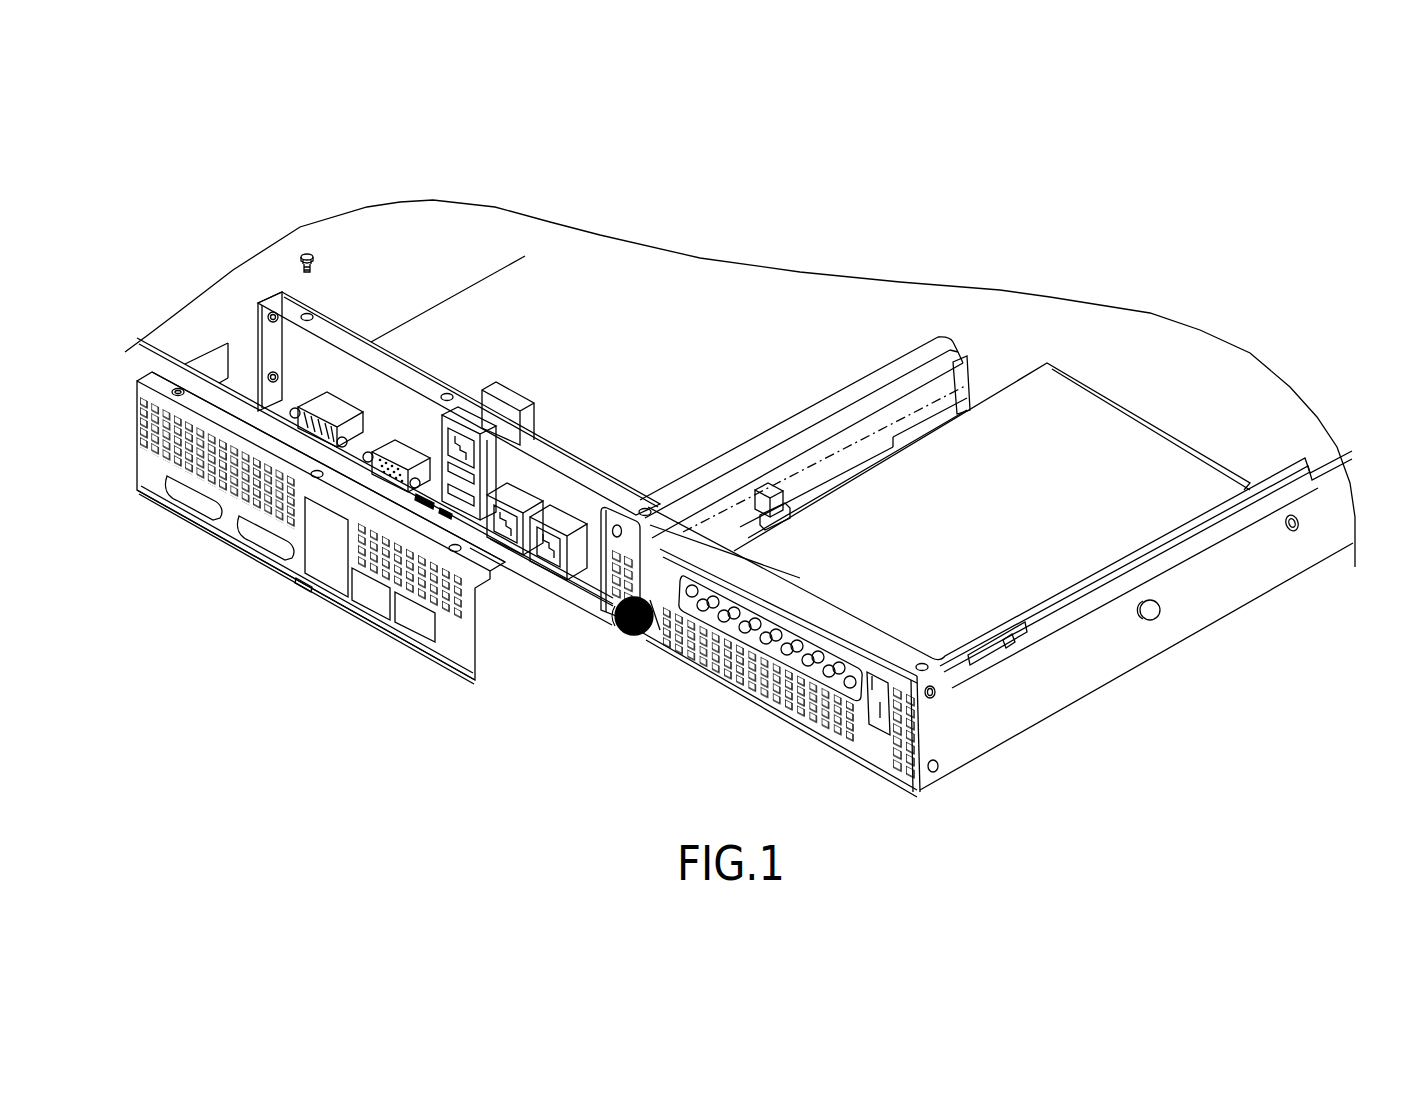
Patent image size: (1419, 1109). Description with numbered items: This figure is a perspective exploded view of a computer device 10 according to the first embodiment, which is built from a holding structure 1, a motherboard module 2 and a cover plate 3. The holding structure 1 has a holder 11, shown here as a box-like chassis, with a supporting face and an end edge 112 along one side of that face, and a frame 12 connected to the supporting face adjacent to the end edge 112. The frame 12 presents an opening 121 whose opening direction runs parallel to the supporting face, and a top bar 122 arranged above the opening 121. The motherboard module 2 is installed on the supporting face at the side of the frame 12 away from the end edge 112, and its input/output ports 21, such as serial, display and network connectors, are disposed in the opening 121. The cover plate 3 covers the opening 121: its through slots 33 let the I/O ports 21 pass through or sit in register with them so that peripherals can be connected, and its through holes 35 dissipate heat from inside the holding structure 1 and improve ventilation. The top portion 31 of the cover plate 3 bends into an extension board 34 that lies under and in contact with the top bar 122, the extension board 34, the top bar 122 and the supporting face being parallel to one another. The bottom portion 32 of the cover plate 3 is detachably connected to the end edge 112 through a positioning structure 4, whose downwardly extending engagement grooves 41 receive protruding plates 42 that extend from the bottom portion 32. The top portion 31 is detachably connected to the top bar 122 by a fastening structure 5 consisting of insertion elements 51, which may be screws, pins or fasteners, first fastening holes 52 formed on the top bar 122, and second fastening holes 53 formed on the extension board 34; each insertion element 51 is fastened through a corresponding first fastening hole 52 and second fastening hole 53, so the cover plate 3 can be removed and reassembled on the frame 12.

The computer device 10 is at (744, 166).
The holding structure 1 is at (612, 678).
The holder 11 is at (553, 587).
The end edge 112 is at (510, 555).
The frame 12 is at (583, 600).
The opening 121 is at (396, 393).
The top bar 122 is at (540, 450).
The motherboard module 2 is at (707, 281).
The input/output ports 21 is at (322, 403).
The cover plate 3 is at (146, 476).
The top portion 31 is at (156, 372).
The bottom portion 32 is at (247, 558).
The through slots 33 is at (184, 514).
The extension board 34 is at (277, 451).
The through holes 35 is at (143, 441).
The positioning structure 4 is at (309, 594).
The engagement grooves 41 is at (425, 492).
The protruding plates 42 is at (303, 585).
The fastening structure 5 is at (302, 249).
The insertion elements 51 is at (316, 257).
The first fastening holes 52 is at (305, 314).
The second fastening holes 53 is at (178, 388).